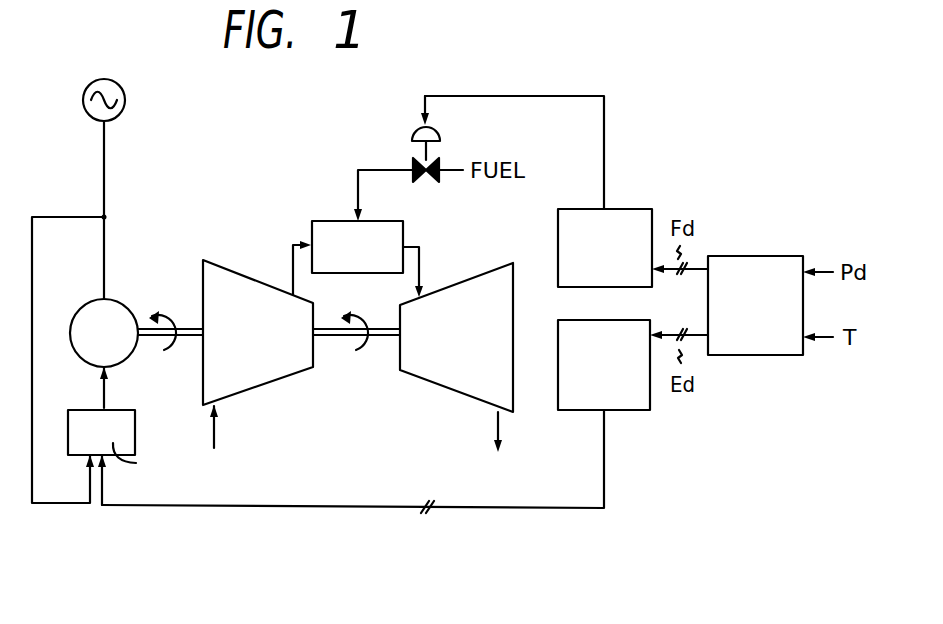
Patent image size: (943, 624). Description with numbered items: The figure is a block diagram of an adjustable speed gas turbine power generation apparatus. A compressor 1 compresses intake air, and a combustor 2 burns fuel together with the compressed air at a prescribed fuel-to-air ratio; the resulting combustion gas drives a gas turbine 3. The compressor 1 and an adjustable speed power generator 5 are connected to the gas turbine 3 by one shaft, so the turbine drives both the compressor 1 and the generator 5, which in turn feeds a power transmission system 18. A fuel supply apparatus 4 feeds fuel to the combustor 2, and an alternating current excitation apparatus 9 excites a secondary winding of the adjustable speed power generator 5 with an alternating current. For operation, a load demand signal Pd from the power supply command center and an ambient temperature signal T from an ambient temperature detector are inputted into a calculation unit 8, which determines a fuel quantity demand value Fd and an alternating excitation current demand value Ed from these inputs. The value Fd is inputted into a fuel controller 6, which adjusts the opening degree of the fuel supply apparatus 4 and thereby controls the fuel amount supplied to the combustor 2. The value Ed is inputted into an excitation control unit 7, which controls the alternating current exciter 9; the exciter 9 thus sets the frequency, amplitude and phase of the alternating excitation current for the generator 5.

The compressor 1 is at (237, 273).
The combustor 2 is at (396, 223).
The gas turbine 3 is at (471, 277).
The fuel supply apparatus 4 is at (412, 136).
The adjustable speed power generator 5 is at (118, 302).
The fuel controller 6 is at (620, 207).
The excitation control unit 7 is at (569, 410).
The calculation unit 8 is at (770, 252).
The alternating current excitation apparatus 9 is at (135, 420).
The power transmission system 18 is at (121, 90).